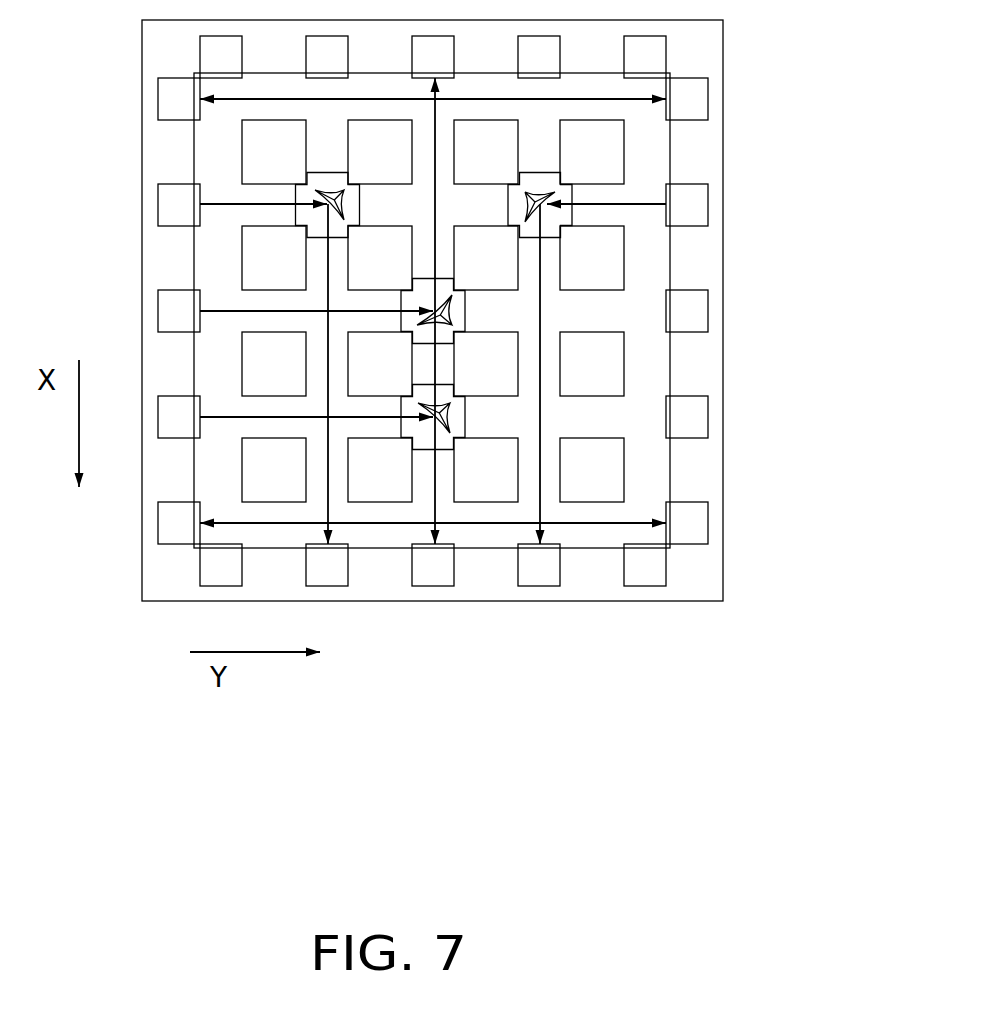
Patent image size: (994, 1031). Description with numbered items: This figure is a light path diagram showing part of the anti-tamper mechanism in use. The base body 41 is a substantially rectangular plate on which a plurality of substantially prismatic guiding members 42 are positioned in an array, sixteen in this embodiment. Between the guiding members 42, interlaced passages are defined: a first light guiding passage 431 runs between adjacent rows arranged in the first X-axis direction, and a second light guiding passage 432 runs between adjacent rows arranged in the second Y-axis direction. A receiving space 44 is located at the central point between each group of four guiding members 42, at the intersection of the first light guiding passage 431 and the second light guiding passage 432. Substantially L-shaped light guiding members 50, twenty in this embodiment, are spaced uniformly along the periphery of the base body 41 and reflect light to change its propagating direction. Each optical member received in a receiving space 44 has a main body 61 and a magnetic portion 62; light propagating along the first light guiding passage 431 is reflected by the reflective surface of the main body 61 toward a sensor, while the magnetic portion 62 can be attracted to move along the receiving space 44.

The base body 41 is at (155, 172).
The guiding member 42 is at (610, 150).
The first light guiding passage 431 is at (545, 268).
The second light guiding passage 432 is at (605, 312).
The receiving space 44 is at (462, 422).
The light guiding member 50 is at (163, 92).
The main body 61 is at (315, 189).
The magnetic portion 62 is at (313, 217).